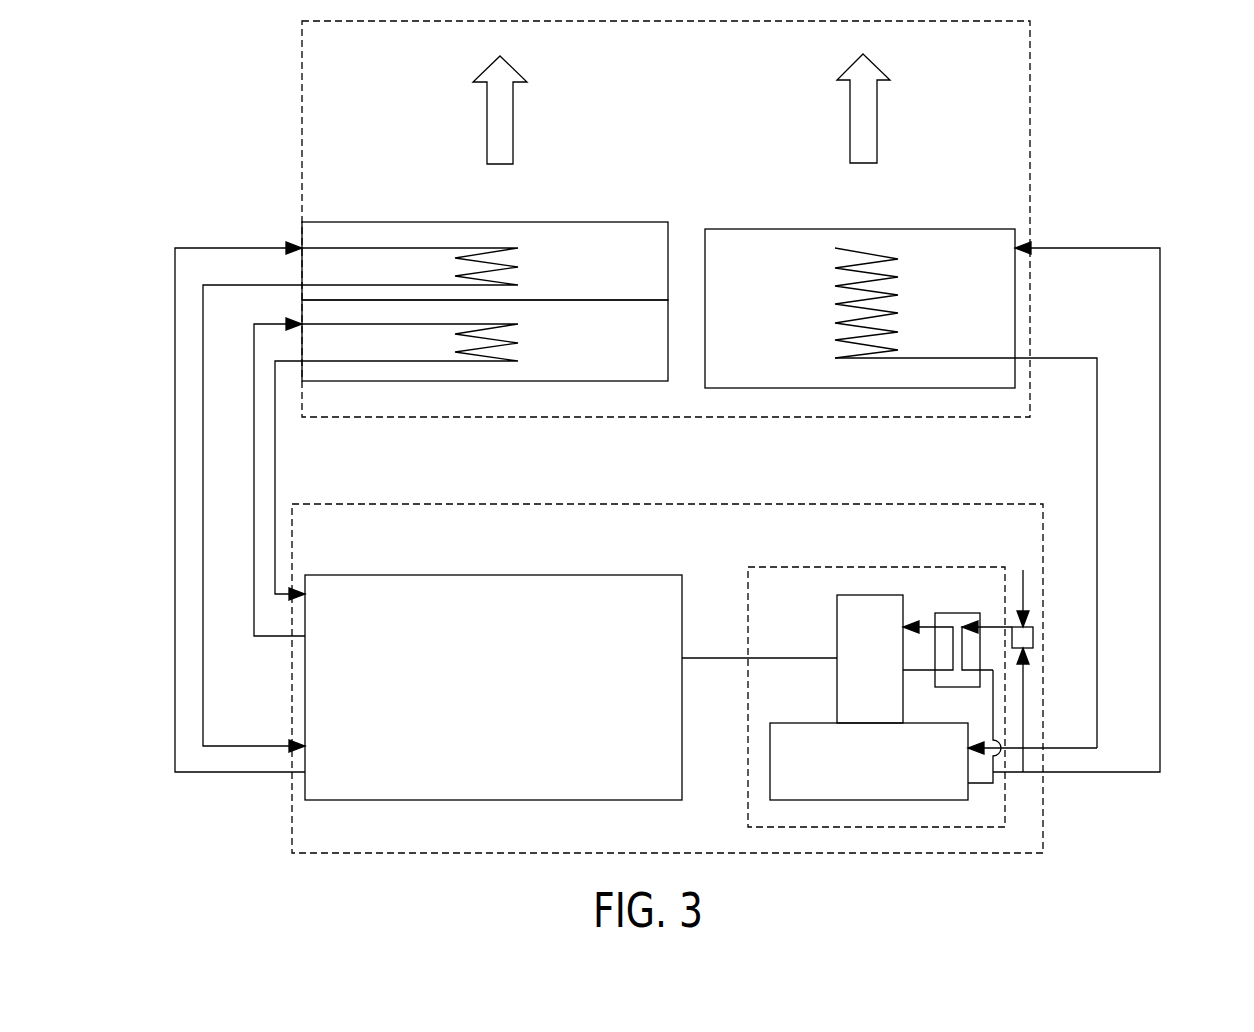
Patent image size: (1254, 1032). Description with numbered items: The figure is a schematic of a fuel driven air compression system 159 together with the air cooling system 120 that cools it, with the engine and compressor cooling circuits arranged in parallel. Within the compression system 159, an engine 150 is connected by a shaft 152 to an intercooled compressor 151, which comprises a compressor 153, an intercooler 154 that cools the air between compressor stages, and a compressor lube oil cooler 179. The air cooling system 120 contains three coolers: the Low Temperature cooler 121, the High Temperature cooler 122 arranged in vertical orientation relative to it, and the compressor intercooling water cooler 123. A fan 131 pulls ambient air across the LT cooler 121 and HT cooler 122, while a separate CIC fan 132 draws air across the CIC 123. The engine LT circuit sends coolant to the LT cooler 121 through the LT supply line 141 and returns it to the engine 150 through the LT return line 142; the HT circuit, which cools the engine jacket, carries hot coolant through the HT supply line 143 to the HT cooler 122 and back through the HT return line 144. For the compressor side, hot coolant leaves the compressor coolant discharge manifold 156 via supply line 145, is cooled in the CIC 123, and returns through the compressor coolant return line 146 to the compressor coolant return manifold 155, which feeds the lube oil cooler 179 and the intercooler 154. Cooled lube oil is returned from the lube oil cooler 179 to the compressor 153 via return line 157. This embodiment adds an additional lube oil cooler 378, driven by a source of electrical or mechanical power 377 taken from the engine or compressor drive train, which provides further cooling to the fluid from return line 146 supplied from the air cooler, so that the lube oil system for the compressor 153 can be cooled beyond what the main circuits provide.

The air cooling system 120 is at (1030, 104).
The Low Temperature (LT) cooler 121 is at (520, 342).
The High Temperature (HT) cooler 122 is at (520, 266).
The compressor intercooling water cooler 123 is at (835, 305).
The fan 131 is at (513, 118).
The CIC fan 132 is at (850, 118).
The LT supply line 141 is at (254, 505).
The LT return line 142 is at (275, 485).
The HT supply line 143 is at (175, 425).
The HT return line 144 is at (203, 555).
The supply line 145 is at (1162, 558).
The compressor coolant return line 146 is at (1095, 455).
The engine 150 is at (503, 575).
The intercooled compressor 151 is at (813, 562).
The shaft 152 is at (727, 662).
The compressor 153 is at (837, 620).
The intercooler 154 is at (855, 800).
The compressor coolant return manifold 155 is at (1025, 735).
The compressor coolant discharge manifold 156 is at (993, 722).
The return line 157 is at (930, 612).
The fuel driven air compression system 159 is at (605, 503).
The compressor lube oil cooler 179 is at (943, 612).
The source of electrical or mechanical power 377 is at (1025, 590).
The additional lube oil cooler 378 is at (1027, 638).